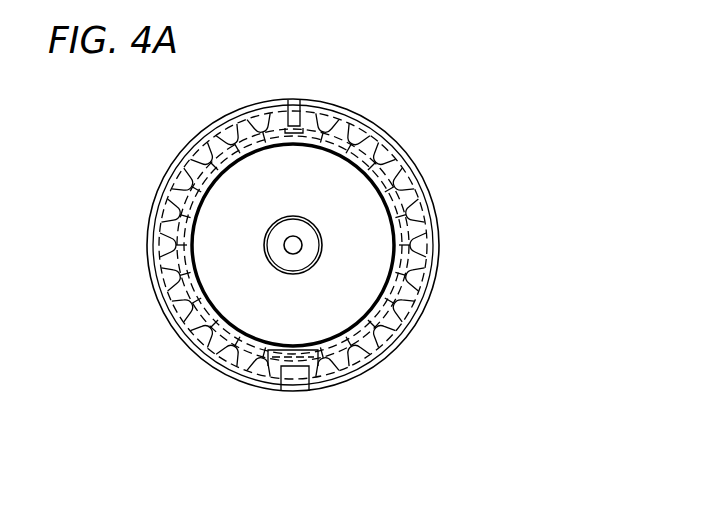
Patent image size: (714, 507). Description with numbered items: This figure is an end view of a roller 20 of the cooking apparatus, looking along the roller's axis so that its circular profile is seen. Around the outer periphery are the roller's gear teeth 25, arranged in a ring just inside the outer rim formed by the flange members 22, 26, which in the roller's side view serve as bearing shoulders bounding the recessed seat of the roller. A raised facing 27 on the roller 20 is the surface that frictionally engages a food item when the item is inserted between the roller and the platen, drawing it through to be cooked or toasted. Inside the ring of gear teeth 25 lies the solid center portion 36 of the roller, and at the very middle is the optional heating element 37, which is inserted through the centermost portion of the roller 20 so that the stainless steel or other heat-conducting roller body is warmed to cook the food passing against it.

The roller 20 is at (345, 213).
The flange member 22 is at (323, 213).
The gear teeth 25 is at (420, 176).
The flange member 26 is at (378, 122).
The raised facing 27 is at (297, 102).
The center portion 36 is at (345, 284).
The heating element 37 is at (265, 252).